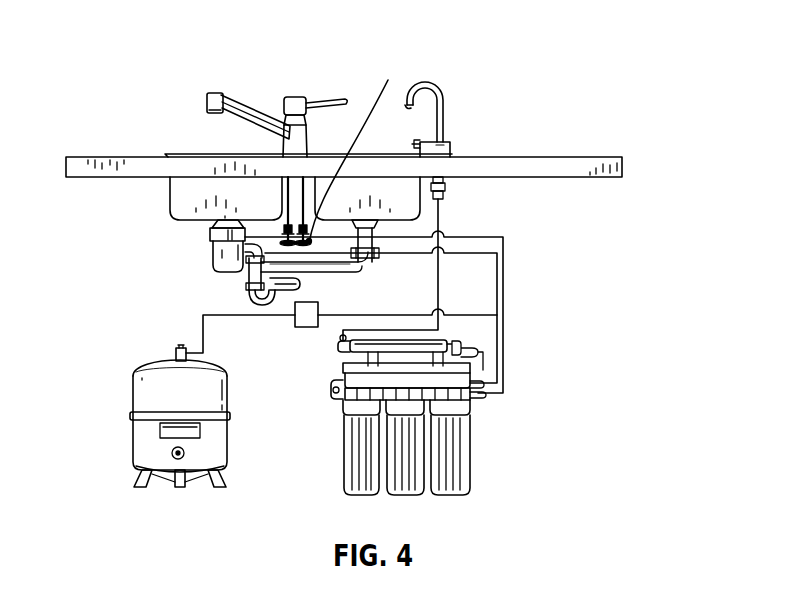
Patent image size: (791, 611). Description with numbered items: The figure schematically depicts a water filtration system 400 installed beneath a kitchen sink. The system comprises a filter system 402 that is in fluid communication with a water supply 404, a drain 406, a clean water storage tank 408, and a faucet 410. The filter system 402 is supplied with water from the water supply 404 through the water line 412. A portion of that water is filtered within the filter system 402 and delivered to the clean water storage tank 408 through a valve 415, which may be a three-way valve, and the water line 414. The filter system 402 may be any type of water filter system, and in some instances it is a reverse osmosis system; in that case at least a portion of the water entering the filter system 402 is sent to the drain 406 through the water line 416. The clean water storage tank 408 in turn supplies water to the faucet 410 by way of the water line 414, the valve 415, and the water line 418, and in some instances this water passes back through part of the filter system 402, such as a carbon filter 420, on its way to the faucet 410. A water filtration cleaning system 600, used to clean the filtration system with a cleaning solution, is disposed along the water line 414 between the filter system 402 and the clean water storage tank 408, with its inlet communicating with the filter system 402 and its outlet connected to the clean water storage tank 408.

The water filtration system 400 is at (640, 62).
The filter system 402 is at (330, 476).
The water supply 404 is at (360, 147).
The drain 406 is at (350, 268).
The clean water storage tank 408 is at (140, 440).
The faucet 410 is at (448, 107).
The water line 412 is at (503, 358).
The water line 414 is at (203, 322).
The valve 415 is at (460, 350).
The water line 416 is at (503, 297).
The water line 418 is at (447, 220).
The carbon filter 420 is at (397, 348).
The water filtration cleaning system 600 is at (295, 325).